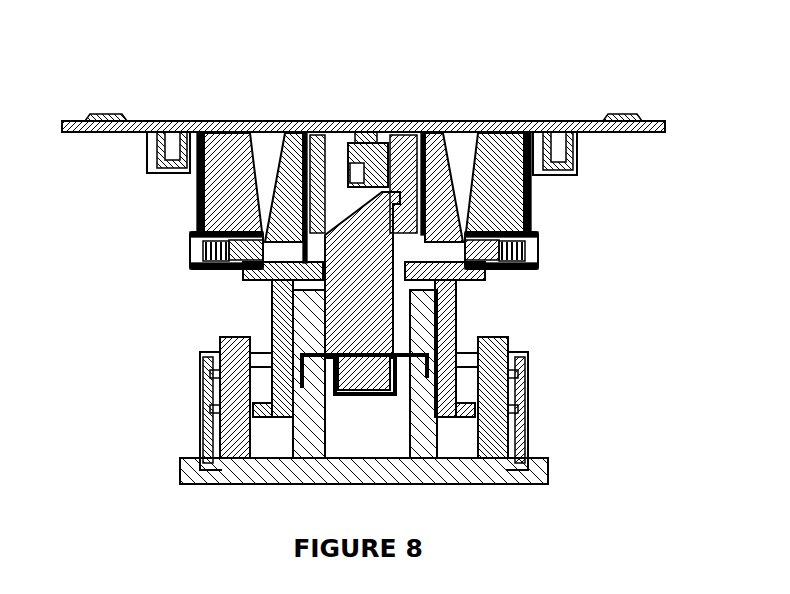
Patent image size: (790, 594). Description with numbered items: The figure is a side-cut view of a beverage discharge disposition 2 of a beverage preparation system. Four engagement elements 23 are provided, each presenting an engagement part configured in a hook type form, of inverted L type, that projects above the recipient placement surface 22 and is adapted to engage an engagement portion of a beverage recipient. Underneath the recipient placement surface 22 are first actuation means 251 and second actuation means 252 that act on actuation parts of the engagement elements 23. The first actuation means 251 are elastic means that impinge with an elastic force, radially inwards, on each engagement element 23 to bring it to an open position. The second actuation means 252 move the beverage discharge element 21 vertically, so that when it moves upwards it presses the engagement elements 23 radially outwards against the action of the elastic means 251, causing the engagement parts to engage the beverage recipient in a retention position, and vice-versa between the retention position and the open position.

The beverage discharge disposition 2 is at (364, 242).
The beverage discharge element 21 is at (372, 126).
The recipient placement surface 22 is at (246, 114).
The engagement element 23 is at (444, 187).
The first actuation means 251 is at (190, 256).
The second actuation means 252 is at (407, 323).